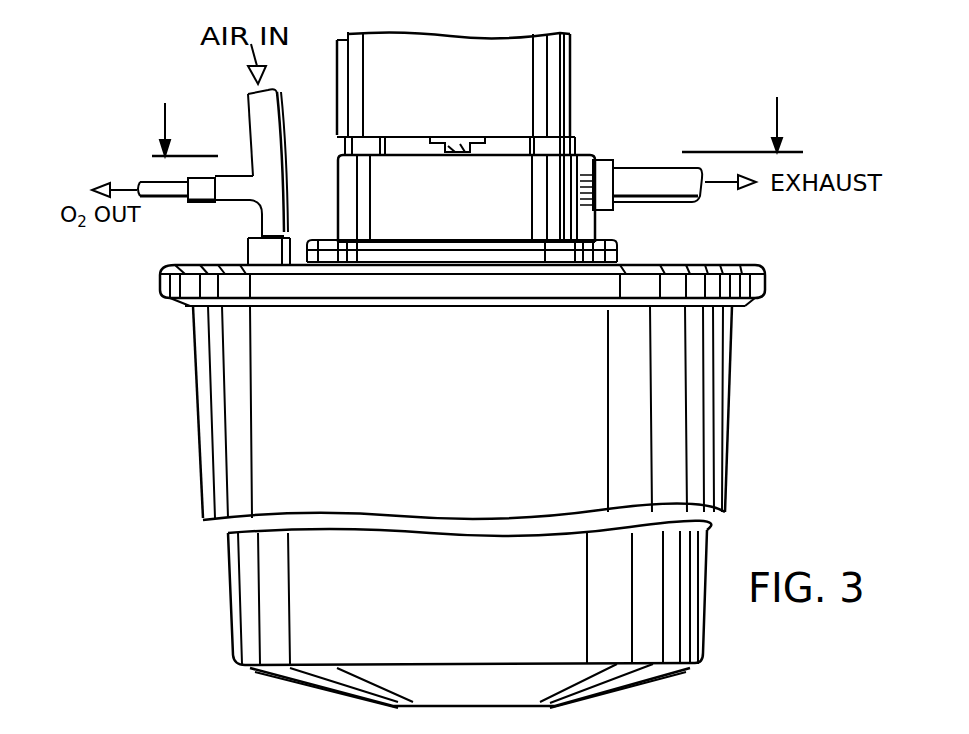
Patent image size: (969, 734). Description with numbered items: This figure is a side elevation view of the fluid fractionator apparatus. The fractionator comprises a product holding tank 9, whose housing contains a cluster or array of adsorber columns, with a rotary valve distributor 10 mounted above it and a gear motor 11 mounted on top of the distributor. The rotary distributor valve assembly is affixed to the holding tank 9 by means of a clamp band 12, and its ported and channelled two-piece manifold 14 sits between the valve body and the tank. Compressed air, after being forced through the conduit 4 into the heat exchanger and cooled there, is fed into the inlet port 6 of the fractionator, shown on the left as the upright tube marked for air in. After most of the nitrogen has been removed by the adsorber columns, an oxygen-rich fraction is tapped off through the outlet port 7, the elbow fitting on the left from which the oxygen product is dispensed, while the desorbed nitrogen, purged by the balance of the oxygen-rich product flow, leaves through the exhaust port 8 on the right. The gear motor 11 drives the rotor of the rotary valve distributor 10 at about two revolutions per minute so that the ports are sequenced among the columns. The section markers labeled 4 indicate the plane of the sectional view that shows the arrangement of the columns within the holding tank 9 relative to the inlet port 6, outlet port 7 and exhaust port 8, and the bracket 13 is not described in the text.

The conduit 4 is at (477, 111).
The inlet port 6 is at (266, 135).
The outlet port 7 is at (244, 200).
The exhaust port 8 is at (636, 170).
The product holding tank 9 is at (711, 443).
The rotary valve distributor 10 is at (579, 143).
The gear motor 11 is at (572, 72).
The clamp band 12 is at (763, 298).
The coupling bracket 13 is at (475, 140).
The two-piece manifold 14 is at (620, 247).